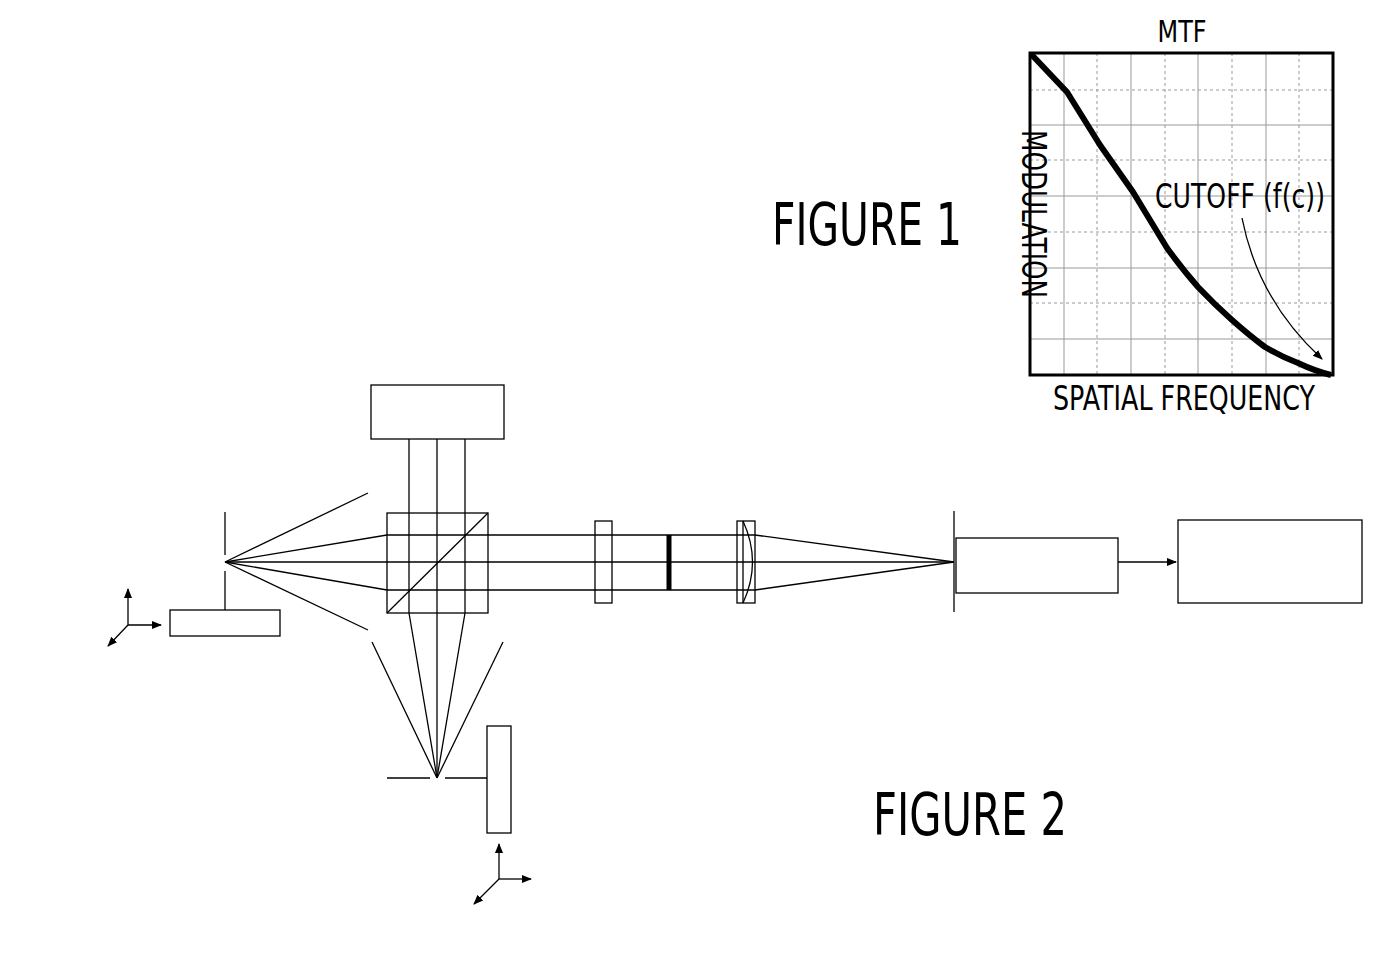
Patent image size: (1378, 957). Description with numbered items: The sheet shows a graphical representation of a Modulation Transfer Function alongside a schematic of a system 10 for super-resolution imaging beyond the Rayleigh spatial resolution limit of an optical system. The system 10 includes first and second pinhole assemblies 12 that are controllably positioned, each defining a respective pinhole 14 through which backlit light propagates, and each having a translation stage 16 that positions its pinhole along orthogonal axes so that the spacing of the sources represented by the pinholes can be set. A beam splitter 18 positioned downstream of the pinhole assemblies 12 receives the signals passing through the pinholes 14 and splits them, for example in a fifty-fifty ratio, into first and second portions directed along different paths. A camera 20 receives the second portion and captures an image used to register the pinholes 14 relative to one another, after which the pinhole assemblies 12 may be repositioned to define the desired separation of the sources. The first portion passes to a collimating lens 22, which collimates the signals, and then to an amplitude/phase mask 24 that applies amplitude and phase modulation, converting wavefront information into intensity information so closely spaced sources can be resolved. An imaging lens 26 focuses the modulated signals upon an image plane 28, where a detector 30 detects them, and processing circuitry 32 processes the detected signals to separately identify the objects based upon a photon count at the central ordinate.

The system 10 is at (713, 439).
The pinhole assemblies 12 is at (225, 533).
The pinhole 14 is at (403, 780).
The translation stage 16 is at (224, 636).
The beam splitter 18 is at (483, 524).
The camera 20 is at (504, 412).
The collimating lens 22 is at (603, 603).
The amplitude/phase mask 24 is at (669, 590).
The imaging lens 26 is at (747, 603).
The image plane 28 is at (956, 520).
The detector 30 is at (1030, 538).
The processing circuitry 32 is at (1273, 520).